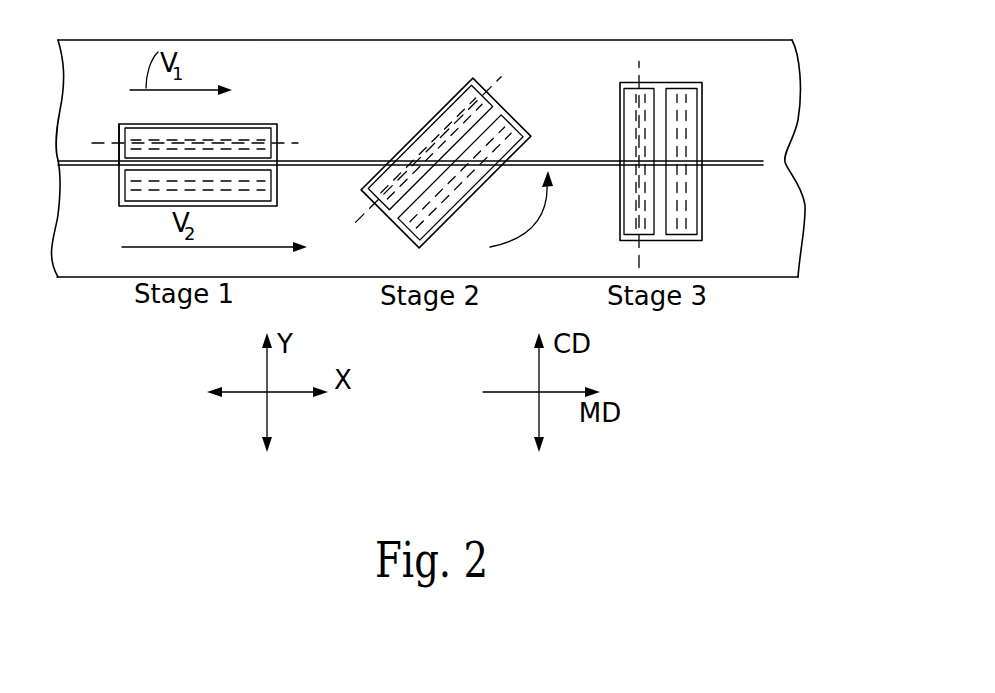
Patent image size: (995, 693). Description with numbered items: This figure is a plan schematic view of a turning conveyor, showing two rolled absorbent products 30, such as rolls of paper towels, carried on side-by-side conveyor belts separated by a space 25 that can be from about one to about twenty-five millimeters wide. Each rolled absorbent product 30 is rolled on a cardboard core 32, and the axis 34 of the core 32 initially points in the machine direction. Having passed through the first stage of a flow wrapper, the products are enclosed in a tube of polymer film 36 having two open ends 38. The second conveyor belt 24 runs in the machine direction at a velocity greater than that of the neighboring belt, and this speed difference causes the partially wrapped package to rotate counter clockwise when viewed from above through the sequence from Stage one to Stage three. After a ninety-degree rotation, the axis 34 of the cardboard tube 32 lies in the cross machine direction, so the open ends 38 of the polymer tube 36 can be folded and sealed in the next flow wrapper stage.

The second conveyor belt 24 is at (743, 97).
The space 25 is at (765, 163).
The rolled absorbent product 30 is at (246, 133).
The cardboard core 32 is at (276, 135).
The axis 34 is at (107, 143).
The tube of polymer film 36 is at (128, 124).
The open ends 38 is at (272, 132).